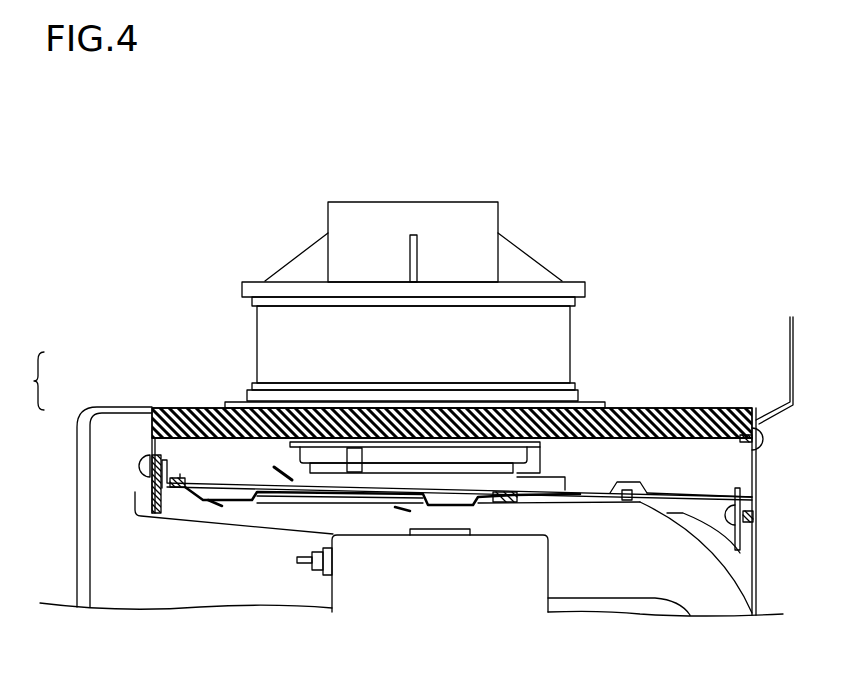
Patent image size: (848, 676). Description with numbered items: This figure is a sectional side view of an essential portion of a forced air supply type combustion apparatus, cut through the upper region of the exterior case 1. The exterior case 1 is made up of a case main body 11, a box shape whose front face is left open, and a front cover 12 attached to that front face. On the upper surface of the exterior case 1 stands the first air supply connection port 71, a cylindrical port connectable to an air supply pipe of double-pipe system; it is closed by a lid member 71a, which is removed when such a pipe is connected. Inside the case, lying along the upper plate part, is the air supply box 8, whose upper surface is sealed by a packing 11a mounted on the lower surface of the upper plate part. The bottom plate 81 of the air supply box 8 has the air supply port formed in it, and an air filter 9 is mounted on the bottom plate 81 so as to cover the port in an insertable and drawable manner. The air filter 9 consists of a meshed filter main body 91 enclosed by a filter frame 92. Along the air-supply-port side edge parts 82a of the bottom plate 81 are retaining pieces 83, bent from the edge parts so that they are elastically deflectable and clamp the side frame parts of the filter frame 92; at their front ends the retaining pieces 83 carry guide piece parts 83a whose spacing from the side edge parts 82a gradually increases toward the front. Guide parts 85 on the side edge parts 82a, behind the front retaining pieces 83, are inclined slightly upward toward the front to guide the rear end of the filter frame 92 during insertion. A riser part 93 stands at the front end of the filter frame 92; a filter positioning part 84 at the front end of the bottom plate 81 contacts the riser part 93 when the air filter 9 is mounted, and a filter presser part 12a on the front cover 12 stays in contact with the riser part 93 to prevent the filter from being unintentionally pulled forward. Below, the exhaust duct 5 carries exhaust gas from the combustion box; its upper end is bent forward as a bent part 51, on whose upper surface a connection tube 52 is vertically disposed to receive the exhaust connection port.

The exterior case 1 is at (31, 381).
The case main body 11 is at (172, 404).
The front cover 12 is at (86, 462).
The filter presser part 12a is at (143, 470).
The packing 11a is at (610, 438).
The first air supply connection port 71 is at (570, 345).
The lid member 71a is at (566, 281).
The air-supply-port side edge parts 82a is at (337, 408).
The air filter 9 is at (422, 417).
The riser part 93 is at (163, 467).
The filter positioning part 84 is at (170, 482).
The connection tube 52 is at (300, 456).
The guide parts 85 is at (274, 468).
The filter frame 92 is at (169, 488).
The retaining pieces 83 is at (242, 501).
The guide piece parts 83a is at (220, 503).
The filter main body 91 is at (312, 494).
The bent part 51 is at (283, 517).
The bottom plate 81 is at (682, 497).
The air supply box 8 is at (697, 508).
The exhaust duct 5 is at (720, 583).